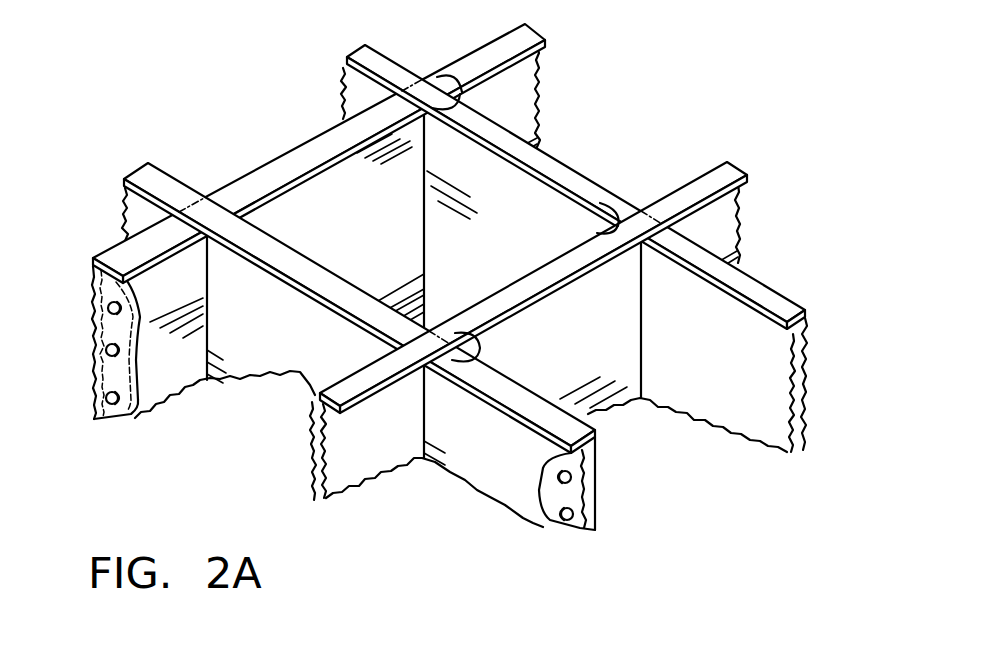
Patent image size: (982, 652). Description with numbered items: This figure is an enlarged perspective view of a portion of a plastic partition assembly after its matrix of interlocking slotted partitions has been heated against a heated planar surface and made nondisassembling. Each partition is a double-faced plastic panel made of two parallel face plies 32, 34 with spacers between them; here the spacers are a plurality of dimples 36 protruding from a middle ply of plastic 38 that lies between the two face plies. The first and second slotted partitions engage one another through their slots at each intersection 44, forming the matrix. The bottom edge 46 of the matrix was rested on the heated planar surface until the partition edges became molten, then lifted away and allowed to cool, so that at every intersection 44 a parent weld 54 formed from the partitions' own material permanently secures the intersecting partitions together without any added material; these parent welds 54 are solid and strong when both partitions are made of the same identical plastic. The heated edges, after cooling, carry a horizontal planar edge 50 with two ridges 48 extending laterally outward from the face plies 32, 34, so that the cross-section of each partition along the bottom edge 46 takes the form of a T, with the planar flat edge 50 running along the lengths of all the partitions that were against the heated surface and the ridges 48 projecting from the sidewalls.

The face ply 32 is at (454, 286).
The face ply 34 is at (88, 338).
The dimples 36 is at (138, 362).
The middle ply of plastic 38 is at (90, 402).
The intersection 44 is at (205, 197).
The bottom edge of the matrix 46 is at (302, 155).
The ridge 48 is at (322, 400).
The horizontal planar edge 50 is at (700, 173).
The parent welds 54 is at (468, 91).